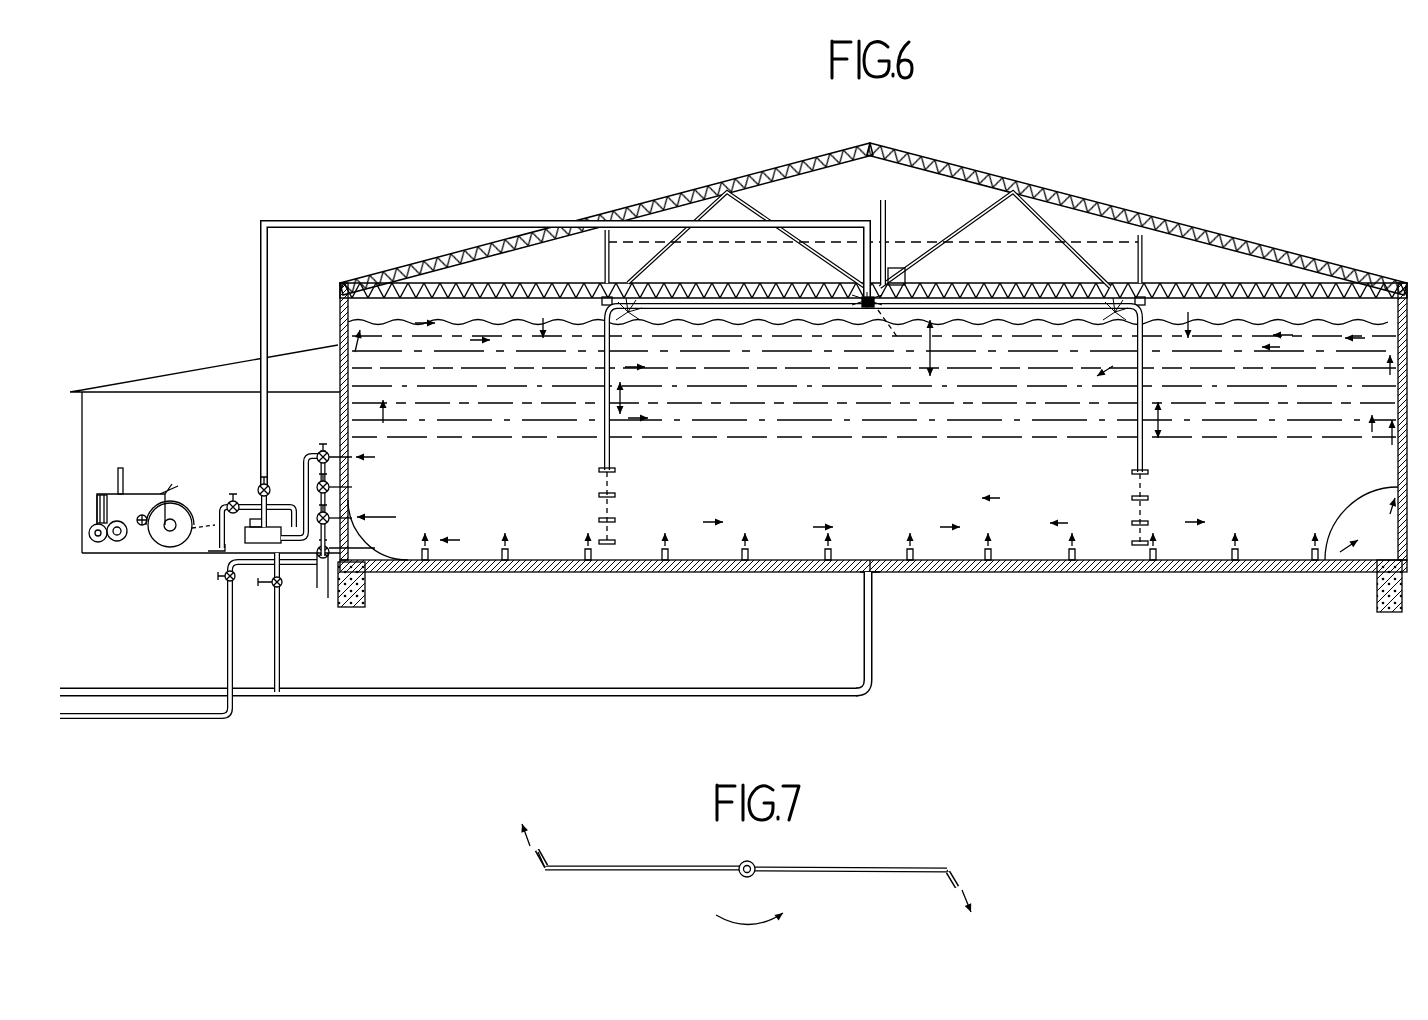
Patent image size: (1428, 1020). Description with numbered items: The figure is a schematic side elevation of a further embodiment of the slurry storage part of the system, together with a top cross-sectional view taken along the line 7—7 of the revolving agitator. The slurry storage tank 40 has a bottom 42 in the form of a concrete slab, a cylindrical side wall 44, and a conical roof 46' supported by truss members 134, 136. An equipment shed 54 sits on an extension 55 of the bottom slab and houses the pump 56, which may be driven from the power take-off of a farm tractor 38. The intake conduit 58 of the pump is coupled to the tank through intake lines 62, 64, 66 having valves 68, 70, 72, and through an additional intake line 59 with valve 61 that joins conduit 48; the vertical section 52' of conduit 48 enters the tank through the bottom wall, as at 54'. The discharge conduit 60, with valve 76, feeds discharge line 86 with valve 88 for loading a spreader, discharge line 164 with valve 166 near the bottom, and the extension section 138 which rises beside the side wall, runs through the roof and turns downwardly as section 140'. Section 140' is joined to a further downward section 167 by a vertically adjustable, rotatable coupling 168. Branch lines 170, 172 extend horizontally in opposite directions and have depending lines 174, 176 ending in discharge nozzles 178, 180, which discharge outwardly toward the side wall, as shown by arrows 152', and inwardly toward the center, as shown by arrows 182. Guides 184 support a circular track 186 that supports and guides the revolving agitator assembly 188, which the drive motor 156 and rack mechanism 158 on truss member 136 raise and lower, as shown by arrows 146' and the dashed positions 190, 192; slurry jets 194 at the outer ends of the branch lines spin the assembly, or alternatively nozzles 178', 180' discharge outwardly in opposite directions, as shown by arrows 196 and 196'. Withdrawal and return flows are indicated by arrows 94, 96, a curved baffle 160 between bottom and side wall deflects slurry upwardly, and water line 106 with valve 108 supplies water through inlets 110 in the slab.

In FIG. 6, the section line 7 is at (1180, 352).
In FIG. 6, the farm tractor 38 is at (143, 490).
In FIG. 6, the slurry storage tank 40 is at (1274, 410).
In FIG. 6, the bottom 42 is at (1048, 572).
In FIG. 6, the side wall 44 is at (1396, 356).
In FIG. 6, the conical roof 46' is at (873, 219).
In FIG. 6, the conduit 48 is at (470, 689).
In FIG. 6, the vertical conduit section 52' is at (894, 632).
In FIG. 6, the equipment shed 54 is at (205, 362).
In FIG. 6, the bottom wall inlet 54' is at (876, 546).
In FIG. 6, the extension of bottom slab 55 is at (133, 556).
In FIG. 6, the pump 56 is at (275, 521).
In FIG. 6, the intake conduit 58 is at (304, 472).
In FIG. 6, the additional intake line 59 is at (282, 636).
In FIG. 6, the discharge conduit 60 is at (248, 530).
In FIG. 6, the valve 61 is at (284, 583).
In FIG. 6, the intake line 62 is at (337, 455).
In FIG. 6, the intake line 64 is at (340, 488).
In FIG. 6, the intake line 66 is at (340, 518).
In FIG. 6, the valve 68 is at (322, 448).
In FIG. 6, the valve 70 is at (331, 484).
In FIG. 6, the valve 72 is at (333, 514).
In FIG. 6, the valve 76 is at (258, 487).
In FIG. 6, the discharge line 86 is at (214, 550).
In FIG. 6, the valve 88 is at (229, 504).
In FIG. 6, the withdrawal arrows 94 is at (388, 485).
In FIG. 6, the discharge arrows 96 is at (406, 548).
In FIG. 6, the water line 106 is at (227, 658).
In FIG. 6, the valve 108 is at (224, 580).
In FIG. 6, the water inlets 110 is at (510, 550).
In FIG. 6, the truss member 134 is at (948, 238).
In FIG. 6, the truss member 136 is at (1197, 284).
In FIG. 6, the extension section 138 is at (462, 220).
In FIG. 6, the downwardly extending discharge conduit section 140' is at (846, 264).
In FIG. 6, the raising and lowering arrows 146' is at (952, 348).
In FIG. 6, the outward discharge direction 152' is at (875, 436).
In FIG. 6, the drive motor 156 is at (898, 266).
In FIG. 6, the rack mechanism 158 is at (888, 210).
In FIG. 6, the curved baffle 160 is at (1385, 545).
In FIG. 6, the discharge line 164 is at (337, 574).
In FIG. 6, the valve 166 is at (328, 600).
In FIG. 7, the valve 166 is at (752, 862).
In FIG. 6, the downwardly extending section 167 is at (862, 305).
In FIG. 6, the rotatable coupling 168 is at (858, 296).
In FIG. 6, the branch discharge line section 170 is at (769, 310).
In FIG. 7, the branch discharge line section 170 is at (660, 866).
In FIG. 6, the branch discharge line section 172 is at (1028, 310).
In FIG. 7, the branch discharge line section 172 is at (862, 866).
In FIG. 6, the downwardly extending section 174 is at (604, 401).
In FIG. 7, the downwardly extending section 174 is at (545, 870).
In FIG. 6, the downwardly extending section 176 is at (1143, 385).
In FIG. 7, the downwardly extending section 176 is at (950, 868).
In FIG. 6, the discharge nozzle 178 is at (622, 488).
In FIG. 7, the discharge nozzle 178' is at (571, 846).
In FIG. 6, the discharge nozzle 180 is at (1164, 496).
In FIG. 7, the discharge nozzle 180' is at (930, 897).
In FIG. 6, the inward discharge direction 182 is at (675, 467).
In FIG. 6, the guides 184 is at (604, 256).
In FIG. 6, the circular track 186 is at (603, 306).
In FIG. 6, the revolving agitator assembly 188 is at (888, 387).
In FIG. 7, the revolving agitator assembly 188 is at (758, 905).
In FIG. 6, the raised position 190 is at (895, 330).
In FIG. 6, the raised position 192 is at (1002, 242).
In FIG. 6, the slurry jets 194 is at (632, 318).
In FIG. 7, the discharge arrows 196 is at (746, 868).
In FIG. 6, the jet spread 196' is at (913, 410).